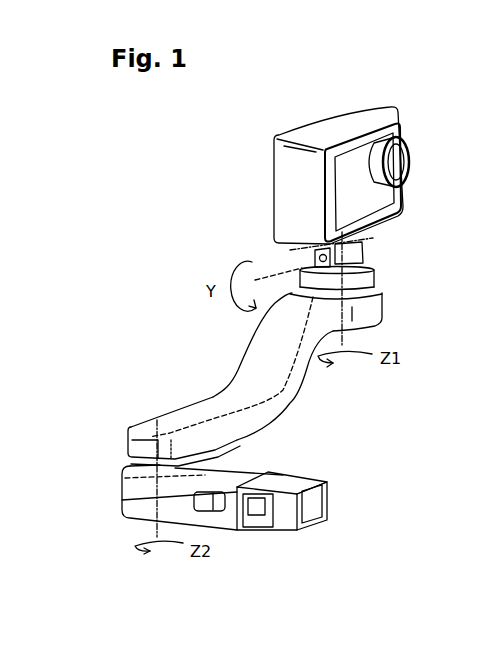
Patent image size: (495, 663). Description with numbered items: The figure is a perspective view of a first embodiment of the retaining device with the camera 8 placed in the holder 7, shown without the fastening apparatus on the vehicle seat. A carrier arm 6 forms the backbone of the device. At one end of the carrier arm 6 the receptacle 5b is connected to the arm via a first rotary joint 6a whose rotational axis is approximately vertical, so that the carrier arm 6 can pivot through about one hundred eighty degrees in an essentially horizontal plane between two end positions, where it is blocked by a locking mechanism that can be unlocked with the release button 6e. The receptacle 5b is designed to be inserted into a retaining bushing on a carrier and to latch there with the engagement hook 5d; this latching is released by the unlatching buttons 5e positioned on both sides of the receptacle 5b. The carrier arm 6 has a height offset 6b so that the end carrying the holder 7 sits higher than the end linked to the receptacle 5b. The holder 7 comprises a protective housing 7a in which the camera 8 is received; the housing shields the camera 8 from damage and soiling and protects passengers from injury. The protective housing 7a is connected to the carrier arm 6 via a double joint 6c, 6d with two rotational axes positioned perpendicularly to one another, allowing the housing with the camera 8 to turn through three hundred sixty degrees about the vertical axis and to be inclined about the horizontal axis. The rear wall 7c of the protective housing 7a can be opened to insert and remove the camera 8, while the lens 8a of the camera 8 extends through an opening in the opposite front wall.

The receptacle 5b is at (291, 457).
The engagement hook 5d is at (264, 512).
The unlatching buttons 5e is at (206, 491).
The carrier arm 6 is at (207, 412).
The first rotary joint 6a is at (125, 492).
The height offset 6b is at (301, 381).
The double joint 6c is at (322, 250).
The double joint 6d is at (373, 275).
The release button 6e is at (140, 450).
The holder 7 is at (406, 257).
The protective housing 7a is at (372, 117).
The rear wall 7c is at (275, 194).
The camera 8 is at (378, 205).
The lens 8a is at (397, 162).